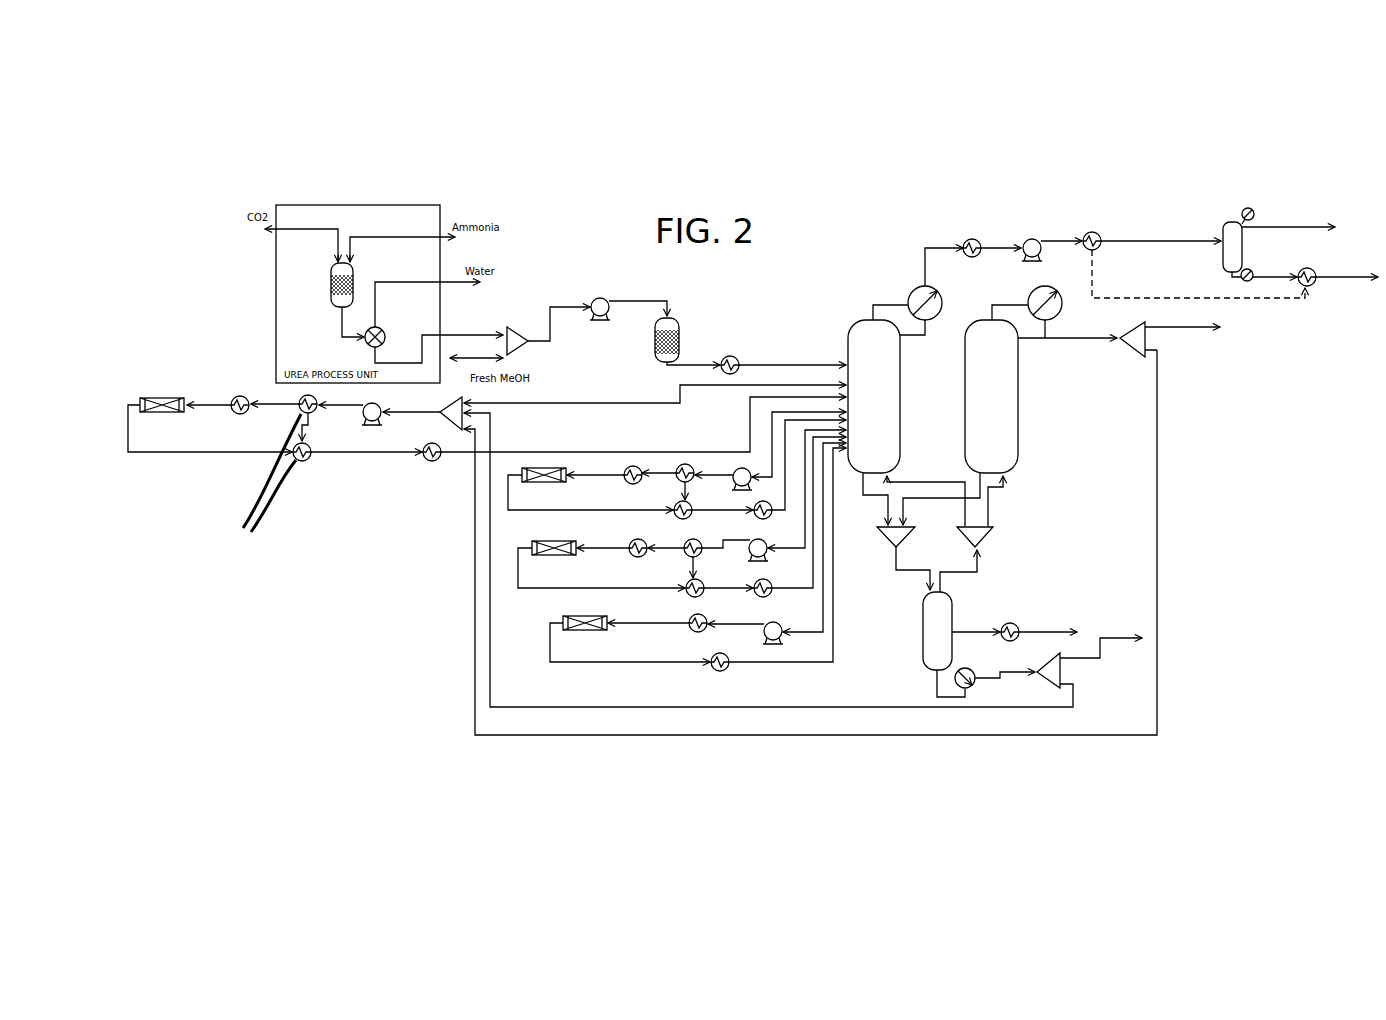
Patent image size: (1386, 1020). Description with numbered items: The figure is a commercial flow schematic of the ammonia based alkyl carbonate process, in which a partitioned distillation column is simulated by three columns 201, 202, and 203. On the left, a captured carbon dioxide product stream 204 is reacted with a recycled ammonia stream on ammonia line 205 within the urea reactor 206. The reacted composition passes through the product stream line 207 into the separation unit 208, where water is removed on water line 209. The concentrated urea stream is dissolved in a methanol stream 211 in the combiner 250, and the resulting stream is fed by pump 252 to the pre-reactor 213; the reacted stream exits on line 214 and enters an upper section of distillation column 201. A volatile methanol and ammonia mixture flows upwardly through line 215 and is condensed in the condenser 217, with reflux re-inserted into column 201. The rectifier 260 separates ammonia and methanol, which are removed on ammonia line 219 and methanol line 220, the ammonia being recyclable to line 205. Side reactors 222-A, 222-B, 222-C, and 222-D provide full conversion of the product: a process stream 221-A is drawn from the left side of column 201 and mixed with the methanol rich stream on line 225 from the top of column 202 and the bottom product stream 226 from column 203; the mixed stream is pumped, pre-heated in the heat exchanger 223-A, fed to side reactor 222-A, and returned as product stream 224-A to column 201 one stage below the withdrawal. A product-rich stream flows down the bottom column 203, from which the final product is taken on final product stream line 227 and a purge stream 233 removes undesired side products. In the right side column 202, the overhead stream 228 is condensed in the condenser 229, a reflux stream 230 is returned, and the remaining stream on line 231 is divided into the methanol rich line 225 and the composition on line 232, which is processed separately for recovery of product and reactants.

The distillation column 201 is at (893, 400).
The distillation column 202 is at (1008, 418).
The distillation column 203 is at (947, 592).
The carbon dioxide product stream 204 is at (320, 228).
The ammonia line 205 is at (378, 236).
The urea reactor 206 is at (333, 281).
The product stream line 207 is at (338, 319).
The separation unit 208 is at (381, 328).
The water line 209 is at (458, 283).
The methanol stream 211 is at (390, 407).
The pre-reactor 213 is at (681, 331).
The reactant stream line 214 is at (764, 358).
The vapor stream line 215 is at (863, 306).
The condenser 217 is at (912, 285).
The ammonia line 219 is at (1248, 228).
The methanol line 220 is at (1318, 282).
The process stream line 221-A is at (705, 386).
The side reactor 222-A is at (158, 402).
The side reactor 222-B is at (544, 476).
The side reactor 222-C is at (554, 549).
The side reactor 222-D is at (585, 624).
The heat exchanger 223-A is at (252, 478).
The product stream line 224-A is at (624, 452).
The methanol rich stream line 225 is at (878, 737).
The bottom product stream line 226 is at (842, 705).
The final product stream line 227 is at (1020, 626).
The overhead stream line 228 is at (1005, 310).
The condenser 229 is at (1058, 322).
The reflux stream line 230 is at (1035, 340).
The remaining stream line 231 is at (1096, 340).
The separately processed stream line 232 is at (1165, 328).
The purge stream 233 is at (1086, 660).
The combiner 250 is at (524, 345).
The pump 252 is at (591, 300).
The rectifier 260 is at (1222, 250).